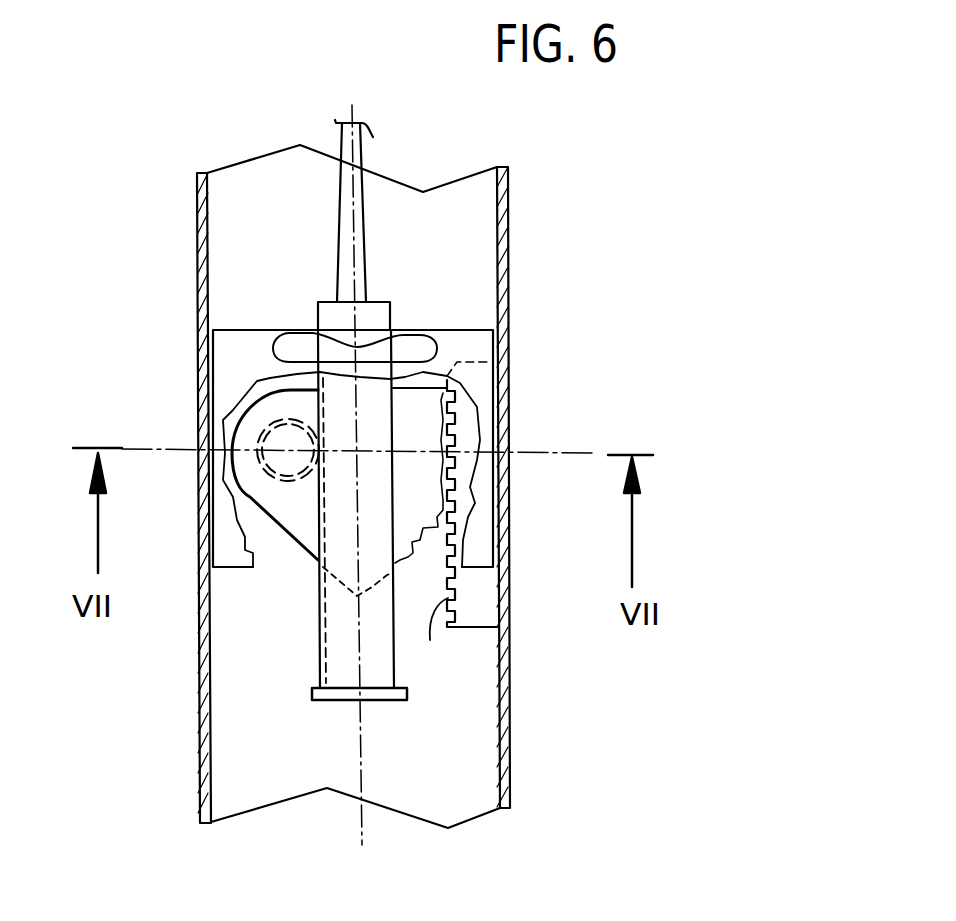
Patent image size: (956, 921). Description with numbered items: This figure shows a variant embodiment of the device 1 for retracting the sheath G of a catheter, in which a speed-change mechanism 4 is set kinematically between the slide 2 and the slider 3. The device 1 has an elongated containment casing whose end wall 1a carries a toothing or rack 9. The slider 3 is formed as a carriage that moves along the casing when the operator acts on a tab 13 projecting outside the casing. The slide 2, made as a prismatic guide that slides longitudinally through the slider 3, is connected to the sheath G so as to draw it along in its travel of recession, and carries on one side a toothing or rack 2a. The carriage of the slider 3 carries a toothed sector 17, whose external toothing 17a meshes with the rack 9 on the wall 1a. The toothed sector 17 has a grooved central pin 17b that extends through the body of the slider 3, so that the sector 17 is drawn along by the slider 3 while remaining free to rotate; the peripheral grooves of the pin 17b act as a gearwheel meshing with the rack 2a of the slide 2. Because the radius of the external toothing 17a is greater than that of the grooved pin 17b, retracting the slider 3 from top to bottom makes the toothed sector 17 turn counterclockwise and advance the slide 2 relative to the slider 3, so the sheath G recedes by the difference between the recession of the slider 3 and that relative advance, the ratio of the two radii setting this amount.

The device 1 is at (436, 486).
The end wall 1a is at (510, 246).
The slide 2 is at (323, 545).
The rack 2a is at (316, 597).
The slider 3 is at (455, 332).
The speed-change mechanism 4 is at (373, 526).
The rack 9 is at (430, 640).
The tab 13 is at (300, 345).
The toothed sector 17 is at (302, 522).
The external toothing 17a is at (410, 558).
The grooved central pin 17b is at (260, 437).
The sheath G is at (367, 243).